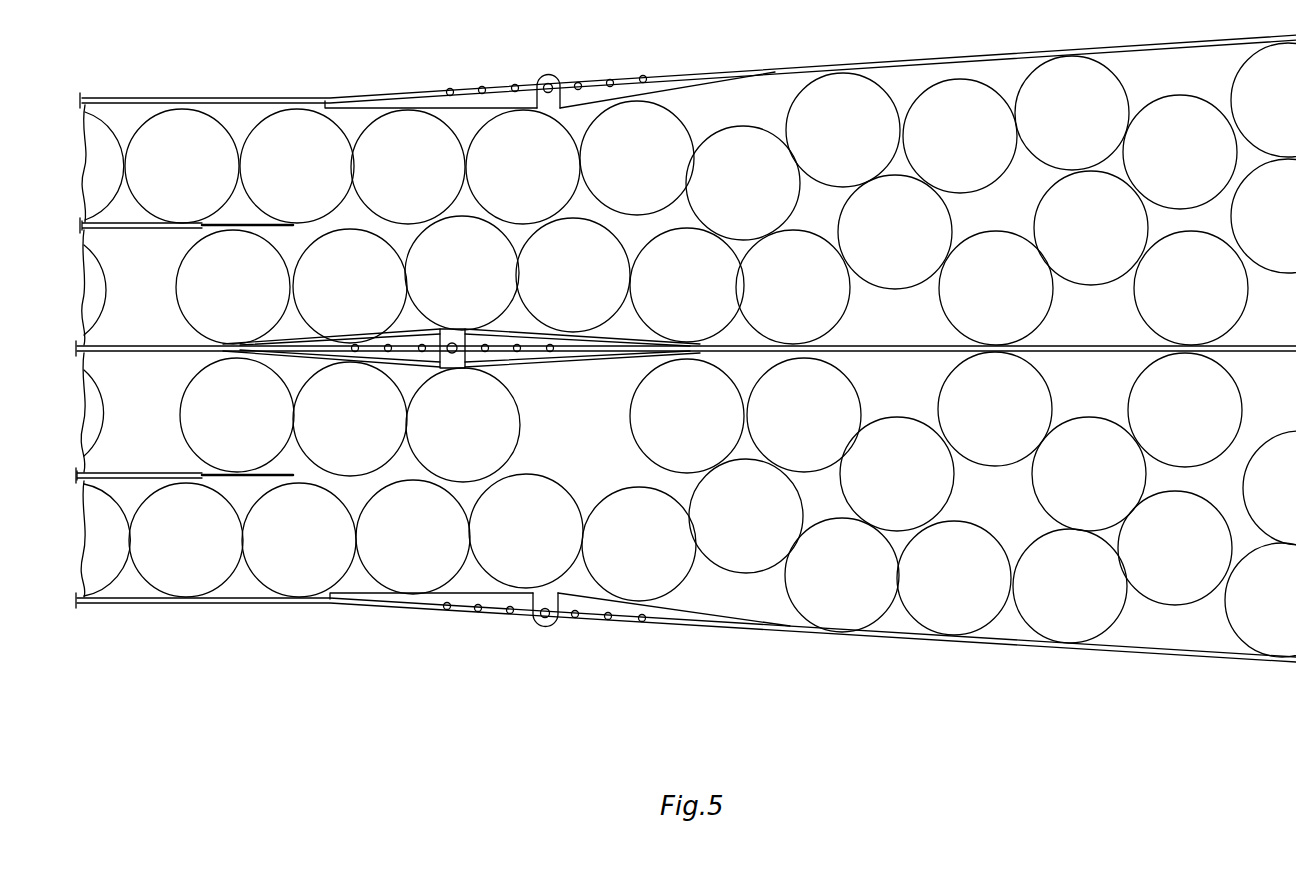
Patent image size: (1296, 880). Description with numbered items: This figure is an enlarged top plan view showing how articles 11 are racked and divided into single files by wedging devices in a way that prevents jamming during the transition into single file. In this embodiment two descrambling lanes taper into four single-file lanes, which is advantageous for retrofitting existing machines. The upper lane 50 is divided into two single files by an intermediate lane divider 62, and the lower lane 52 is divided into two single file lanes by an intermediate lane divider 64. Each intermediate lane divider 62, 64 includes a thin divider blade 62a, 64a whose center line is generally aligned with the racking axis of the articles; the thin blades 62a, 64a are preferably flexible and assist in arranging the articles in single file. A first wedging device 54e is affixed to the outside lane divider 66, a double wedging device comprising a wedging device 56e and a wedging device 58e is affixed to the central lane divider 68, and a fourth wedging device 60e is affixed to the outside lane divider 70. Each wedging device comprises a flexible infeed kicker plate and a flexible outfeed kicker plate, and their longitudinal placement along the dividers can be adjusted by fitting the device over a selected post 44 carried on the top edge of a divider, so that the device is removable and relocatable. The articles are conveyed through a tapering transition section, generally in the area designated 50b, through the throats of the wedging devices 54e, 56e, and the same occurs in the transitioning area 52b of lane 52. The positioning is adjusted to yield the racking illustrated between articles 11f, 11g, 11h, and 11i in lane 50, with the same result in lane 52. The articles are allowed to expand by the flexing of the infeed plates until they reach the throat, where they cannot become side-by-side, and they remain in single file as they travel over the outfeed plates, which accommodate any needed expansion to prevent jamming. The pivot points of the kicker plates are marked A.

The articles 11 is at (752, 202).
The article 11f is at (426, 187).
The article 11g is at (544, 188).
The article 11h is at (482, 290).
The article 11i is at (592, 291).
The post 44 is at (520, 86).
The lane 50 is at (689, 123).
The tapering transition section 50b is at (689, 62).
The lane 52 is at (686, 587).
The transitioning area 52b is at (686, 645).
The first wedging device 54e is at (468, 106).
The wedging device 56e is at (518, 332).
The wedging device 58e is at (527, 375).
The fourth wedging device 60e is at (498, 598).
The intermediate lane divider 62 is at (134, 223).
The thin divider blade 62a is at (250, 223).
The intermediate lane divider 64 is at (157, 481).
The thin divider blade 64a is at (272, 481).
The outside lane divider 66 is at (815, 66).
The lane divider 68 is at (872, 346).
The outside lane divider 70 is at (871, 638).
The pivot point A is at (629, 96).